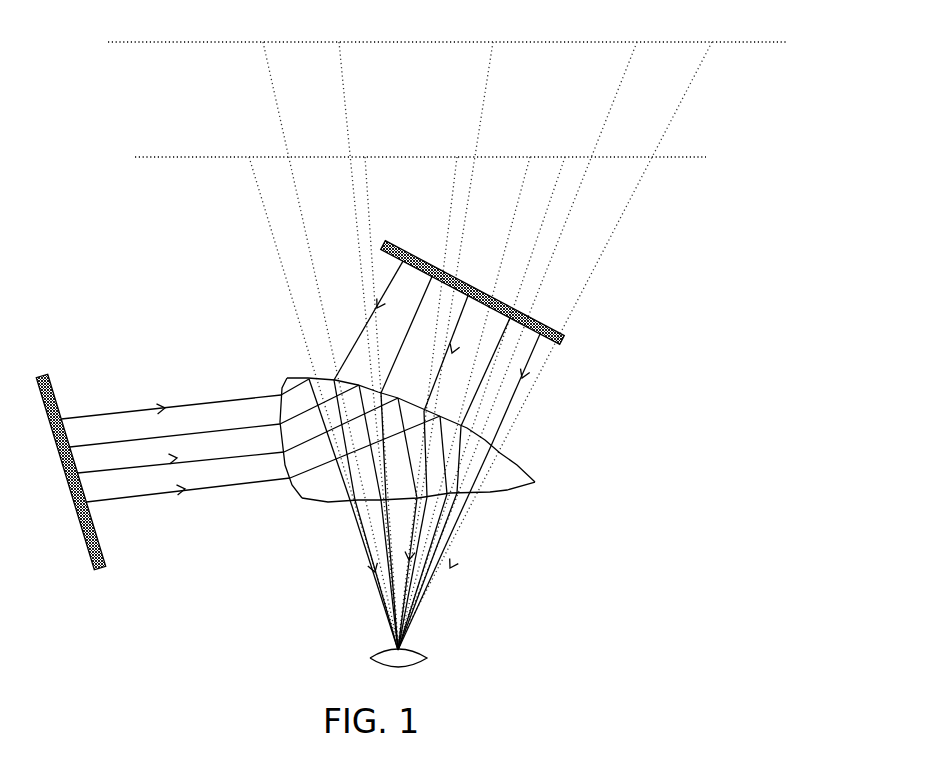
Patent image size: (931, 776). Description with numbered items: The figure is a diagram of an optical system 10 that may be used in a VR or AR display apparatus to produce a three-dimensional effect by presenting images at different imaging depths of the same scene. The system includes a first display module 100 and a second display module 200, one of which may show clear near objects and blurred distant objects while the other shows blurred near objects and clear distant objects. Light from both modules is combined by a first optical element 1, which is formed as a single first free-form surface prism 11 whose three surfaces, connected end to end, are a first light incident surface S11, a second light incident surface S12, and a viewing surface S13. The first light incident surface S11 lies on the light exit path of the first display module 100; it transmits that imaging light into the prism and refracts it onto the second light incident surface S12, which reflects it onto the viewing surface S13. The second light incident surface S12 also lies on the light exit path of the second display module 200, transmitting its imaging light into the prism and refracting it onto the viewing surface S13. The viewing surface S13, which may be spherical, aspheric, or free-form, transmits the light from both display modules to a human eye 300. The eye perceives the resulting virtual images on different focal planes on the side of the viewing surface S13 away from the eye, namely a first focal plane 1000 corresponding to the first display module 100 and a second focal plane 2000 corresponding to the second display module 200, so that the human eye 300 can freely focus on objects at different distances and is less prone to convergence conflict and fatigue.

The optical system 10 is at (56, 128).
The first display module 100 is at (50, 381).
The second display module 200 is at (562, 331).
The first focal plane 1000 is at (676, 158).
The second focal plane 2000 is at (723, 43).
The first optical element 1 is at (404, 458).
The first free-form surface prism 11 is at (405, 453).
The first light incident surface S11 is at (282, 395).
The second light incident surface S12 is at (512, 457).
The viewing surface S13 is at (502, 490).
The human eye 300 is at (415, 656).